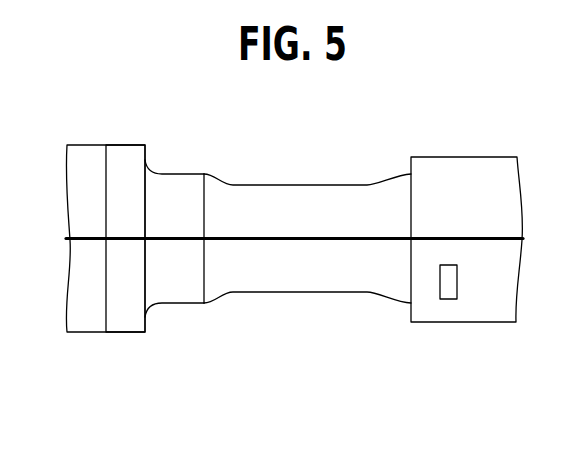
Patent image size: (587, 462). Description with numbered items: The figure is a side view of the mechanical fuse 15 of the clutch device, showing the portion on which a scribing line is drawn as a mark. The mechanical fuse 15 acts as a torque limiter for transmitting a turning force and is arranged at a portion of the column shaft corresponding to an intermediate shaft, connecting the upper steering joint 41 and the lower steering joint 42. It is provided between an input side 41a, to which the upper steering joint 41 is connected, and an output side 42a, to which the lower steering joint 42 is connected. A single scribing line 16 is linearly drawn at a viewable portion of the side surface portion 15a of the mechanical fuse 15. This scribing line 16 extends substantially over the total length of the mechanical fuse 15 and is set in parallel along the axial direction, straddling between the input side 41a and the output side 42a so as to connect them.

The mechanical fuse 15 is at (278, 210).
The side surface portion 15a is at (330, 233).
The scribing line 16 is at (263, 237).
The upper steering joint 41 is at (106, 257).
The input side 41a is at (123, 145).
The lower steering joint 42 is at (466, 262).
The output side 42a is at (463, 157).